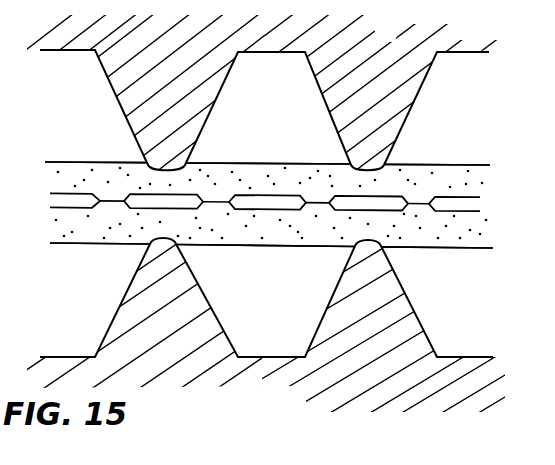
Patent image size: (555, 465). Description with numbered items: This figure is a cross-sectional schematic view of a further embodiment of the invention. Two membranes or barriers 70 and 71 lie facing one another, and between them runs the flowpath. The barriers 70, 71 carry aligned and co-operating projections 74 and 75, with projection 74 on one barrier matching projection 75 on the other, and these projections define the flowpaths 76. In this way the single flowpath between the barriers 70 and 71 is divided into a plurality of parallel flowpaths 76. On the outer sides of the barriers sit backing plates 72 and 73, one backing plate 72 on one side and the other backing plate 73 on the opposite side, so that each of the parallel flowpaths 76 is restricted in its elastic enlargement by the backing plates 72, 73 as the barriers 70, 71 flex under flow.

The membrane or barrier 70 is at (457, 177).
The membrane or barrier 71 is at (475, 239).
The backing plate 72 is at (338, 65).
The backing plate 73 is at (313, 385).
The projection 74 is at (431, 170).
The projection 75 is at (431, 170).
The flowpath 76 is at (142, 208).